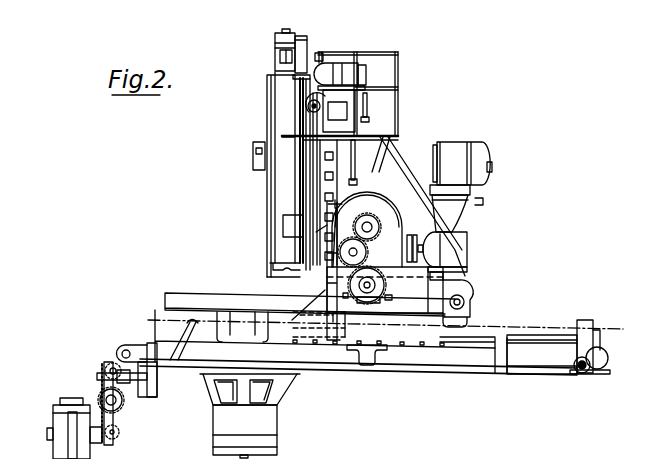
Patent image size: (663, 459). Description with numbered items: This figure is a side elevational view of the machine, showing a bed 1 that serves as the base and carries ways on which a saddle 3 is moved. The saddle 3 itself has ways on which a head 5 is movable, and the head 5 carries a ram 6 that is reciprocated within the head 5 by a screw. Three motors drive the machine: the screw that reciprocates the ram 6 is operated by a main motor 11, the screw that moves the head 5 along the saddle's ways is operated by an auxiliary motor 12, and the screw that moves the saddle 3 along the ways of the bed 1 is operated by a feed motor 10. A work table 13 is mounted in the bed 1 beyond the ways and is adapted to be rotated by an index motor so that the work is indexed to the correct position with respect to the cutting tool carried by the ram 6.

The bed 1 is at (535, 365).
The saddle 3 is at (423, 287).
The head 5 is at (390, 157).
The ram 6 is at (263, 167).
The feed motor 10 is at (610, 352).
The main motor 11 is at (453, 140).
The auxiliary motor 12 is at (452, 245).
The work table 13 is at (172, 293).